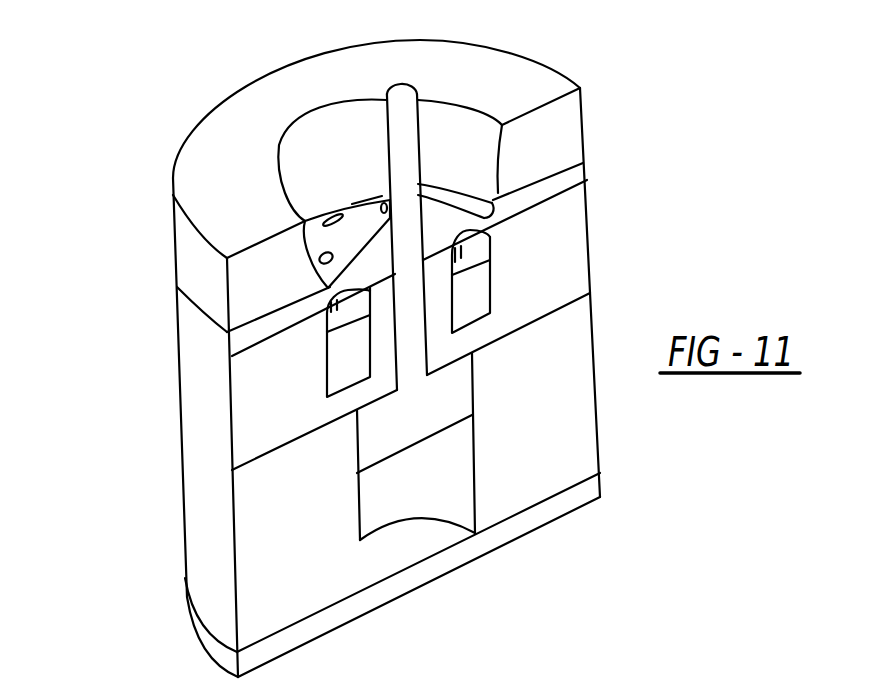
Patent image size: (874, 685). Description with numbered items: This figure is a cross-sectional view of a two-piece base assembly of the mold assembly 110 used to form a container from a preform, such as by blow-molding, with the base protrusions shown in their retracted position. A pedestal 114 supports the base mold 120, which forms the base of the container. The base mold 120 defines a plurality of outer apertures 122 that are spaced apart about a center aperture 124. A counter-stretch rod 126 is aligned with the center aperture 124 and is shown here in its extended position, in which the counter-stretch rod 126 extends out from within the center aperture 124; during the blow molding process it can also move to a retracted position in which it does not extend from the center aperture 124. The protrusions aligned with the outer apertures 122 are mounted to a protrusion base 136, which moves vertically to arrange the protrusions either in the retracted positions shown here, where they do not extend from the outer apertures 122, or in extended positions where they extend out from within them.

The mold assembly 110 is at (92, 202).
The pedestal 114 is at (273, 537).
The base mold 120 is at (470, 208).
The outer apertures 122 is at (320, 261).
The center aperture 124 is at (386, 206).
The counter-stretch rod 126 is at (400, 128).
The protrusion base 136 is at (477, 292).